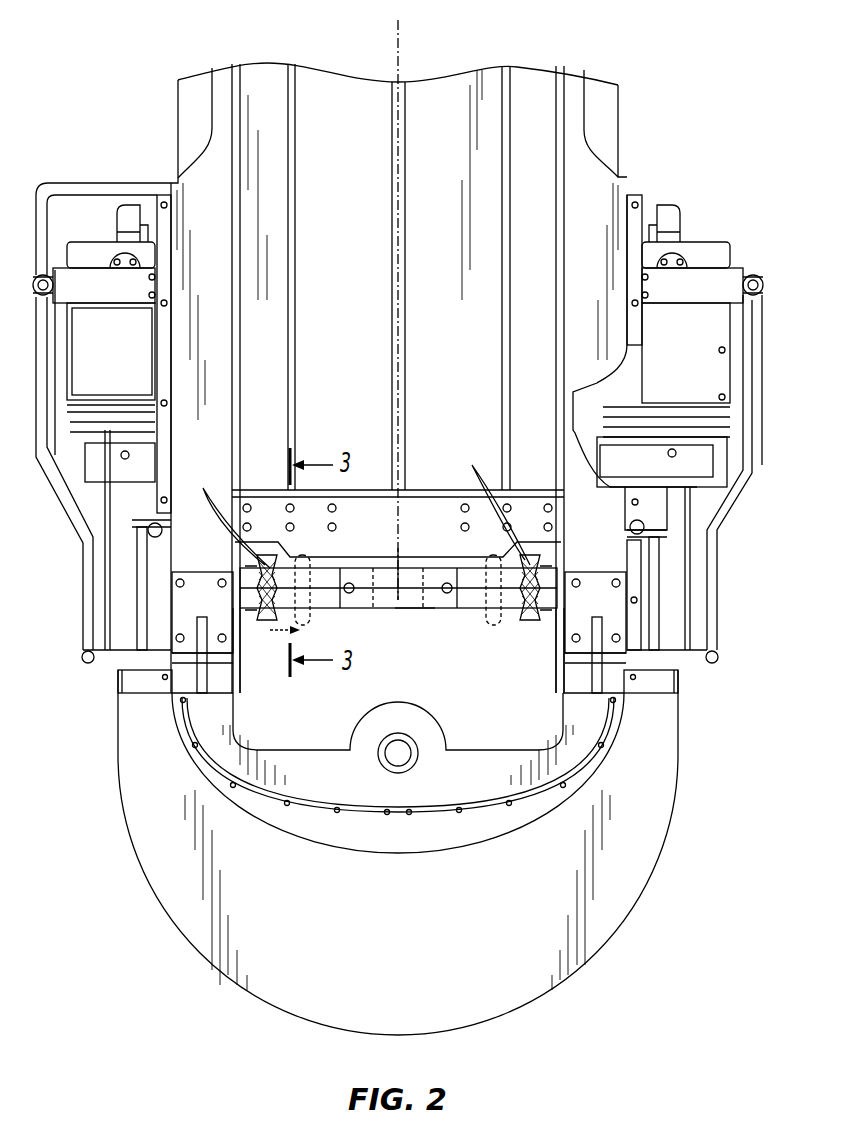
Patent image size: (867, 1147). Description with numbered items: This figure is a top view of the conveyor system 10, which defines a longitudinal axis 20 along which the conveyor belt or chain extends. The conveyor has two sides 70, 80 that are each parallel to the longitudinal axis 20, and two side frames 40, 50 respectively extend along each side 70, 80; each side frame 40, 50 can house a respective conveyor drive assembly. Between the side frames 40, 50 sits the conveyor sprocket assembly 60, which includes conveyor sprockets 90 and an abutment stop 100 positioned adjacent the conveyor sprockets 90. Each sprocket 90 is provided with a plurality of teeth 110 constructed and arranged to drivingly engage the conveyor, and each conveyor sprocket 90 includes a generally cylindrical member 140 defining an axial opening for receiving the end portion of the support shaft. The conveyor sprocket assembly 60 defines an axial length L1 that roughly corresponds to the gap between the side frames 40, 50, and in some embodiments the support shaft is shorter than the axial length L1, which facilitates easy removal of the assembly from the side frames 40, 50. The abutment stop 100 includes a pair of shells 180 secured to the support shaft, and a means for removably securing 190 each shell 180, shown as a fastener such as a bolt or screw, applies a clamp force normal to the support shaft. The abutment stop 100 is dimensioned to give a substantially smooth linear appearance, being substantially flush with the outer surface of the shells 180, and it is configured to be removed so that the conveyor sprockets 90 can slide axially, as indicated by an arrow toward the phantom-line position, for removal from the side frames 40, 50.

The conveyor system 10 is at (712, 731).
The longitudinal axis 20 is at (400, 52).
The side frame 40 is at (192, 546).
The side frame 50 is at (605, 546).
The conveyor sprocket assembly 60 is at (451, 662).
The side of the conveyor 70 is at (238, 642).
The side of the conveyor 80 is at (560, 640).
The conveyor sprocket 90 is at (262, 625).
The abutment stop 100 is at (405, 610).
The teeth 110 is at (356, 503).
The generally cylindrical member 140 is at (322, 600).
The shell 180 is at (428, 605).
The means for removably securing 190 is at (352, 575).
The axial length L1 is at (412, 595).